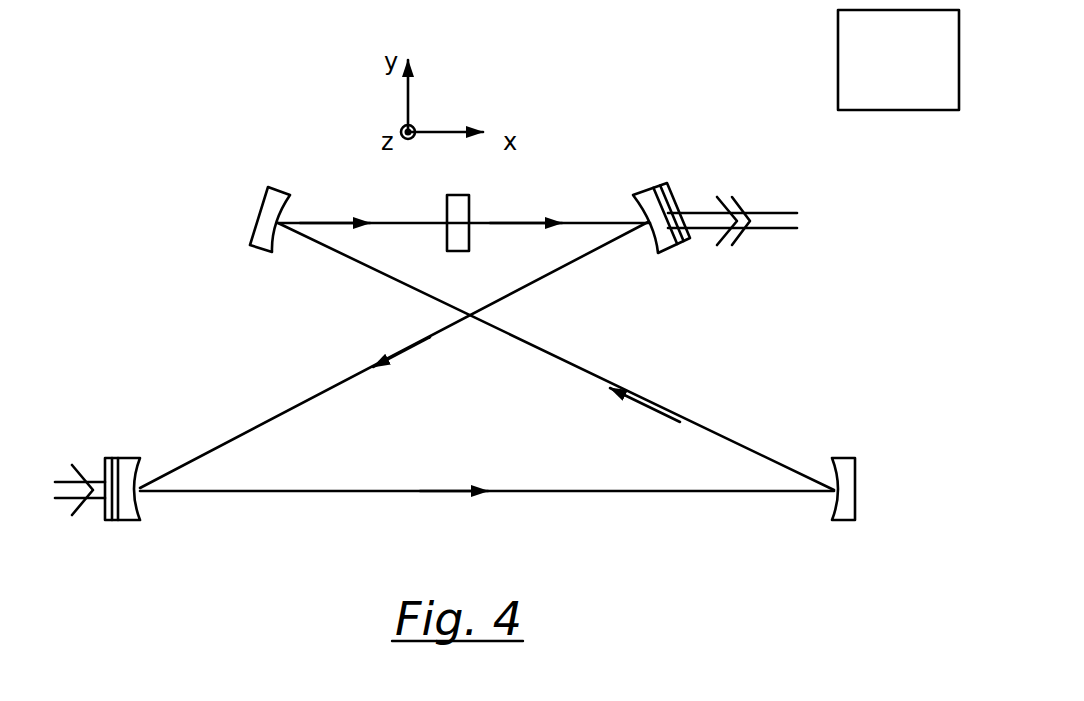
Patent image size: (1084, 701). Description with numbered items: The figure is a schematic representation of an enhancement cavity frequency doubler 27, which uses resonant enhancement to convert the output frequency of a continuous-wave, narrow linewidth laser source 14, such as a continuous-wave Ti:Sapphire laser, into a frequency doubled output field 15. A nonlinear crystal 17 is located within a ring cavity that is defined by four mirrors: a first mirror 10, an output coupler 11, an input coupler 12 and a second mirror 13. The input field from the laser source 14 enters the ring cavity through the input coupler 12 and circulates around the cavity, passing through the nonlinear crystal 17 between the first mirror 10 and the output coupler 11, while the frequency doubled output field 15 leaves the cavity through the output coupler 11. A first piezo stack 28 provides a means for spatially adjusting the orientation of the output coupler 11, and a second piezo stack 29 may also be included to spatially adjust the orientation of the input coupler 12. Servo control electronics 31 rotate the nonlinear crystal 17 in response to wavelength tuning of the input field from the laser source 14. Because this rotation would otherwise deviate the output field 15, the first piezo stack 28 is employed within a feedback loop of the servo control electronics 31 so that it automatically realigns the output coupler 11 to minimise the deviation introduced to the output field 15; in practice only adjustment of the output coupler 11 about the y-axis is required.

The first mirror 10 is at (255, 247).
The output coupler 11 is at (643, 190).
The input coupler 12 is at (130, 522).
The second mirror 13 is at (838, 520).
The laser source 14 is at (65, 472).
The output field 15 is at (762, 213).
The nonlinear crystal 17 is at (470, 208).
The enhancement cavity frequency doubler 27 is at (812, 327).
The first piezo stack 28 is at (683, 250).
The second piezo stack 29 is at (118, 458).
The servo control electronics 31 is at (898, 60).